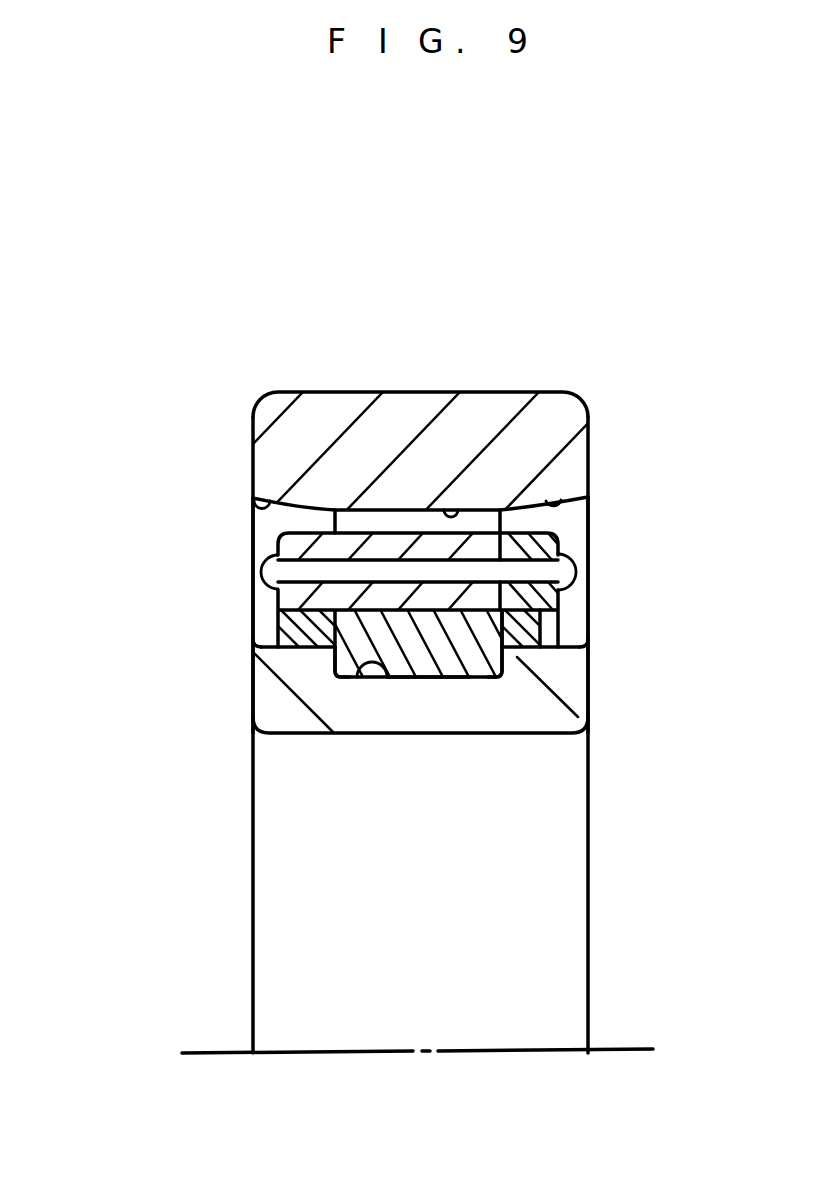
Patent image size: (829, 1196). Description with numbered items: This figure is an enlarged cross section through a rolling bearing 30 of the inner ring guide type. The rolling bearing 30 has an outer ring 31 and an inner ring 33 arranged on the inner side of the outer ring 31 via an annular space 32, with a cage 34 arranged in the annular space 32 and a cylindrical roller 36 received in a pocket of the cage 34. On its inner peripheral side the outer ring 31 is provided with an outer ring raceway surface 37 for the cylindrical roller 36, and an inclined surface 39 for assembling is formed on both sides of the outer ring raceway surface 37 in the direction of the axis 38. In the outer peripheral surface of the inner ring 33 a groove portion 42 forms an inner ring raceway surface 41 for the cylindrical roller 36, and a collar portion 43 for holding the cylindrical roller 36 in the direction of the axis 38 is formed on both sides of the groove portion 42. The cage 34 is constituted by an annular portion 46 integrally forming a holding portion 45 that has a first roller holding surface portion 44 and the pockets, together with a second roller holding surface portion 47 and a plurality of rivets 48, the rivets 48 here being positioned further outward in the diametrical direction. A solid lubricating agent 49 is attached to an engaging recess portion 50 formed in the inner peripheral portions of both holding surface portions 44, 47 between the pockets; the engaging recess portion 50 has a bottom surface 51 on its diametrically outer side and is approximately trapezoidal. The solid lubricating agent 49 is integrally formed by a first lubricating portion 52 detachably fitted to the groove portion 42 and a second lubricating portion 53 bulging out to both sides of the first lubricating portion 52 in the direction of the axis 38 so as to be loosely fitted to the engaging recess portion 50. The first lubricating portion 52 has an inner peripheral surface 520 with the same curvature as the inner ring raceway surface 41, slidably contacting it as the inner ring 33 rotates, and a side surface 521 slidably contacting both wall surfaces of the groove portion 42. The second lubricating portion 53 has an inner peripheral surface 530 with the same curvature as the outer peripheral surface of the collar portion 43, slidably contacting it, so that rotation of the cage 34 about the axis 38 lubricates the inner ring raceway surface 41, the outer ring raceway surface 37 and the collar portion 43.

The rolling bearing 30 is at (527, 322).
The outer ring 31 is at (550, 400).
The annular space 32 is at (582, 518).
The inner ring 33 is at (585, 732).
The cage 34 is at (395, 582).
The cylindrical roller 36 is at (375, 517).
The outer ring raceway surface 37 is at (448, 512).
The axis 38 is at (222, 1053).
The inclined surface 39 is at (258, 503).
The inner ring raceway surface 41 is at (373, 680).
The groove portion 42 is at (433, 670).
The collar portion 43 is at (317, 657).
The first roller holding surface portion 44 is at (322, 553).
The holding portion 45 is at (298, 562).
The annular portion 46 is at (125, 518).
The second roller holding surface portion 47 is at (557, 538).
The rivet 48 is at (577, 572).
The solid lubricating agent 49 is at (454, 747).
The engaging recess portion 50 is at (322, 650).
The bottom surface 51 is at (494, 658).
The first lubricating portion 52 is at (440, 635).
The second lubricating portion 53 is at (300, 622).
The inner peripheral surface 520 is at (402, 690).
The side surface 521 is at (336, 675).
The inner peripheral surface 530 is at (312, 660).